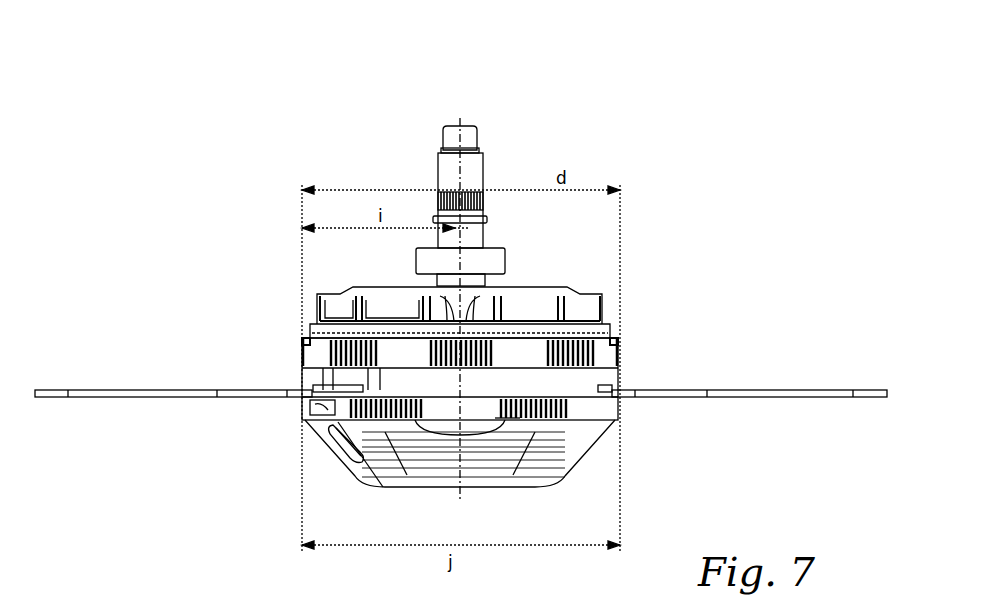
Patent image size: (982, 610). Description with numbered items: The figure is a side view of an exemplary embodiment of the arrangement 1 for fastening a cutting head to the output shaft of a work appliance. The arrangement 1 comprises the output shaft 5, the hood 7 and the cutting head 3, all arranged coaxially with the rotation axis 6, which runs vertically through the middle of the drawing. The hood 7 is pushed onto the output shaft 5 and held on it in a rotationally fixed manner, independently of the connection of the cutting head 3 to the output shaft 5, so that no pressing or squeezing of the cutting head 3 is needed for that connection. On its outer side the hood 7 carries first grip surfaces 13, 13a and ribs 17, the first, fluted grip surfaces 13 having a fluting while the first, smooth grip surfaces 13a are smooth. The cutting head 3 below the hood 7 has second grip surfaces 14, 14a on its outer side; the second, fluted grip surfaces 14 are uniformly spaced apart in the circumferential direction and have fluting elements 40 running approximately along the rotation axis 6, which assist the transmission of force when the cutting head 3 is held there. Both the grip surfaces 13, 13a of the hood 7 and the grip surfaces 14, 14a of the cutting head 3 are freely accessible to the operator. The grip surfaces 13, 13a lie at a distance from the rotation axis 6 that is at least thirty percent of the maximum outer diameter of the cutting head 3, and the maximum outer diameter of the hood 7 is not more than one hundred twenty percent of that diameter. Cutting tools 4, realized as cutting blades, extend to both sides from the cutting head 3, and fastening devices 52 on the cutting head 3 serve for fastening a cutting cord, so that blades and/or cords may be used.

The arrangement 1 is at (574, 100).
The cutting head 3 is at (578, 383).
The cutting tools 4 is at (124, 390).
The output shaft 5 is at (485, 180).
The rotation axis 6 is at (459, 126).
The hood 7 is at (528, 345).
The first, fluted grip surfaces 13 is at (296, 350).
The first, smooth grip surfaces 13a is at (310, 341).
The second, fluted grip surfaces 14 is at (376, 425).
The second grip surface 14a is at (433, 417).
The ribs 17 is at (388, 305).
The fluting elements 40 is at (522, 422).
The fastening devices 52 is at (349, 465).